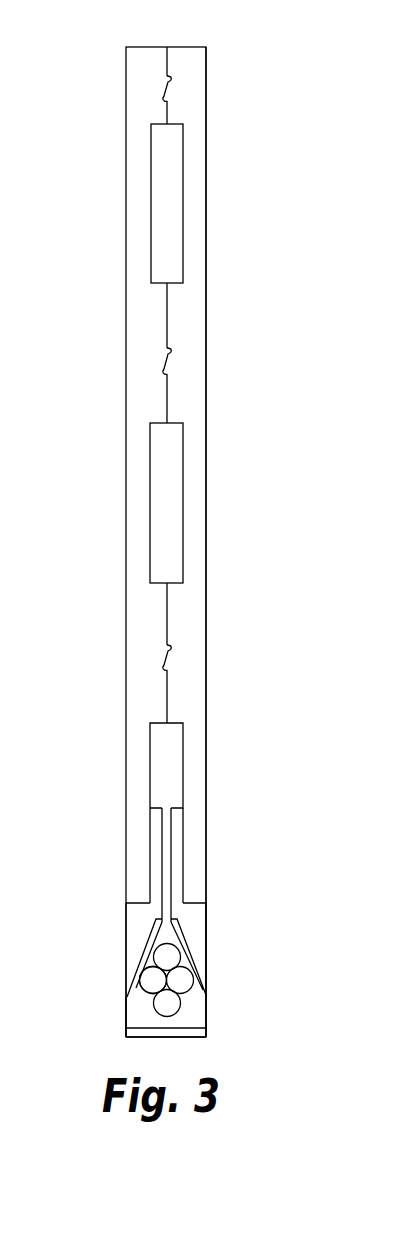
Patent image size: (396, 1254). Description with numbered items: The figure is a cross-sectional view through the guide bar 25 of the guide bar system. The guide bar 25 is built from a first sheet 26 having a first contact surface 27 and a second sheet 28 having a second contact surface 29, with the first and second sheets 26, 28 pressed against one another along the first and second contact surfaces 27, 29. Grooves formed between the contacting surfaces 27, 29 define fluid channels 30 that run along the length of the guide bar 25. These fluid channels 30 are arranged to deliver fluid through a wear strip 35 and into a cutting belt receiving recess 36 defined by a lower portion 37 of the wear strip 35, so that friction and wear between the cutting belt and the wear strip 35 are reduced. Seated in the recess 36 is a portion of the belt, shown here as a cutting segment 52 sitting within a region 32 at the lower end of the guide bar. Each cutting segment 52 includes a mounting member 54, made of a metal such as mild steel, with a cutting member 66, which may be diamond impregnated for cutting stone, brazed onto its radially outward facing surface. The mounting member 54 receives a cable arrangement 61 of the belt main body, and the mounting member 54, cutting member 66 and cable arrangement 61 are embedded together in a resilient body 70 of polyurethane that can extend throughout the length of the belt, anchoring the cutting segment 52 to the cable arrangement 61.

The guide bar 25 is at (149, 542).
The first sheet 26 is at (140, 381).
The first contact surface 27 is at (171, 78).
The second sheet 28 is at (197, 326).
The second contact surface 29 is at (162, 100).
The fluid channels 30 is at (162, 178).
The lower chamber 32 is at (240, 822).
The wear strip 35 is at (175, 848).
The cutting belt receiving recess 36 is at (172, 917).
The lower portion 37 is at (117, 935).
The cutting segment 52 is at (217, 935).
The mounting member 54 is at (203, 988).
The cable arrangement 61 is at (155, 985).
The cutting member 66 is at (147, 1032).
The resilient body 70 is at (127, 1016).